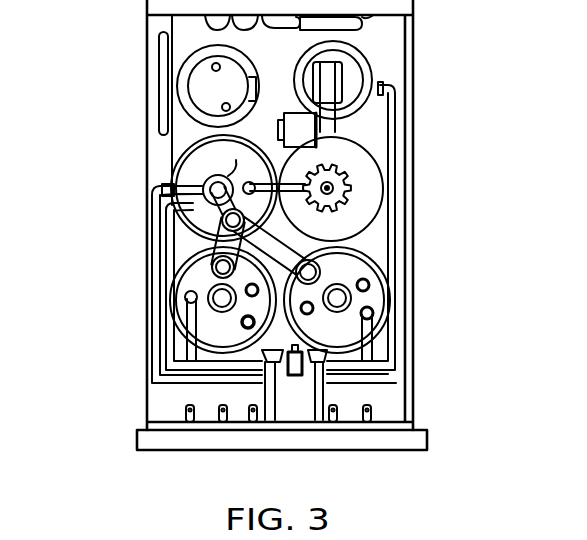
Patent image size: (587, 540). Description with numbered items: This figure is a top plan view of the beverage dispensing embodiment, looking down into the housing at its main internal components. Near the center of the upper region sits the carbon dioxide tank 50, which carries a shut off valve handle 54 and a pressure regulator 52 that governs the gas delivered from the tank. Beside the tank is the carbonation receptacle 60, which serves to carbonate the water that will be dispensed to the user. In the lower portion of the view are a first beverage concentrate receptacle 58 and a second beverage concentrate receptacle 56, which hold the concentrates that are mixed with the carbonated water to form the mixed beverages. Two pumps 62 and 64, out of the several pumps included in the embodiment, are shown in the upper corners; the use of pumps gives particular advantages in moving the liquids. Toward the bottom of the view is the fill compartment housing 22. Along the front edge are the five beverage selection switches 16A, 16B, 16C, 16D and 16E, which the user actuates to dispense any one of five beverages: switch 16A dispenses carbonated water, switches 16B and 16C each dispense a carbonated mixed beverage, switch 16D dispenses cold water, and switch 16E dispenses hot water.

The beverage selection switch 16A is at (191, 422).
The beverage selection switch 16B is at (223, 422).
The beverage selection switch 16C is at (253, 422).
The beverage selection switch 16D is at (333, 422).
The beverage selection switch 16E is at (367, 422).
The fill compartment housing 22 is at (347, 396).
The carbon dioxide tank 50 is at (388, 186).
The pressure regulator 52 is at (330, 133).
The shut off valve handle 54 is at (345, 199).
The second beverage concentrate receptacle 56 is at (392, 286).
The first beverage concentrate receptacle 58 is at (167, 279).
The carbonation receptacle 60 is at (168, 148).
The pump 62 is at (349, 80).
The pump 64 is at (208, 81).